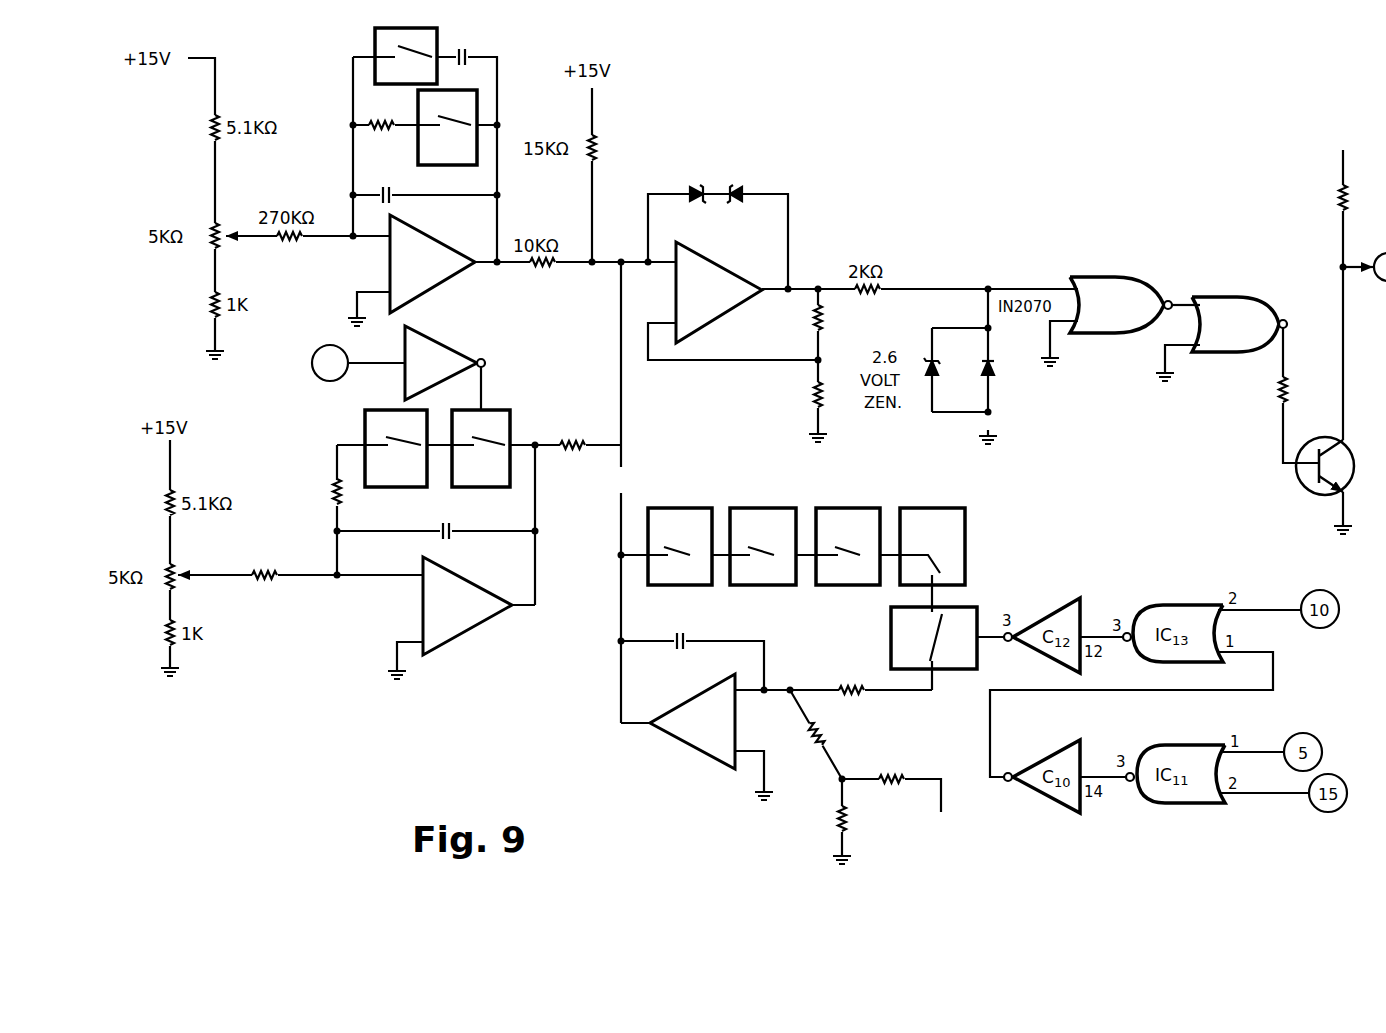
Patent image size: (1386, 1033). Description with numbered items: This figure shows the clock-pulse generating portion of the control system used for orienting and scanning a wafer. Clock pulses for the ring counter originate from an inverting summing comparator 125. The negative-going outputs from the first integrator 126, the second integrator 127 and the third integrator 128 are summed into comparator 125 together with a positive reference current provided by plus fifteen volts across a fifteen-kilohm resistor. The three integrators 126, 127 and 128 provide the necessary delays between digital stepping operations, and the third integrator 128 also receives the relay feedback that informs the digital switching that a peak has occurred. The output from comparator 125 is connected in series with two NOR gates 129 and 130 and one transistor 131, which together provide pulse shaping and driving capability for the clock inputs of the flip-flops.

The inverting summing comparator 125 is at (712, 320).
The integrator No. 1 126 is at (336, 117).
The integrator No. 2 127 is at (360, 592).
The integrator No. 3 128 is at (680, 785).
The NOR gate 129 is at (1101, 277).
The NOR gate 130 is at (1228, 297).
The transistor 131 is at (1299, 332).